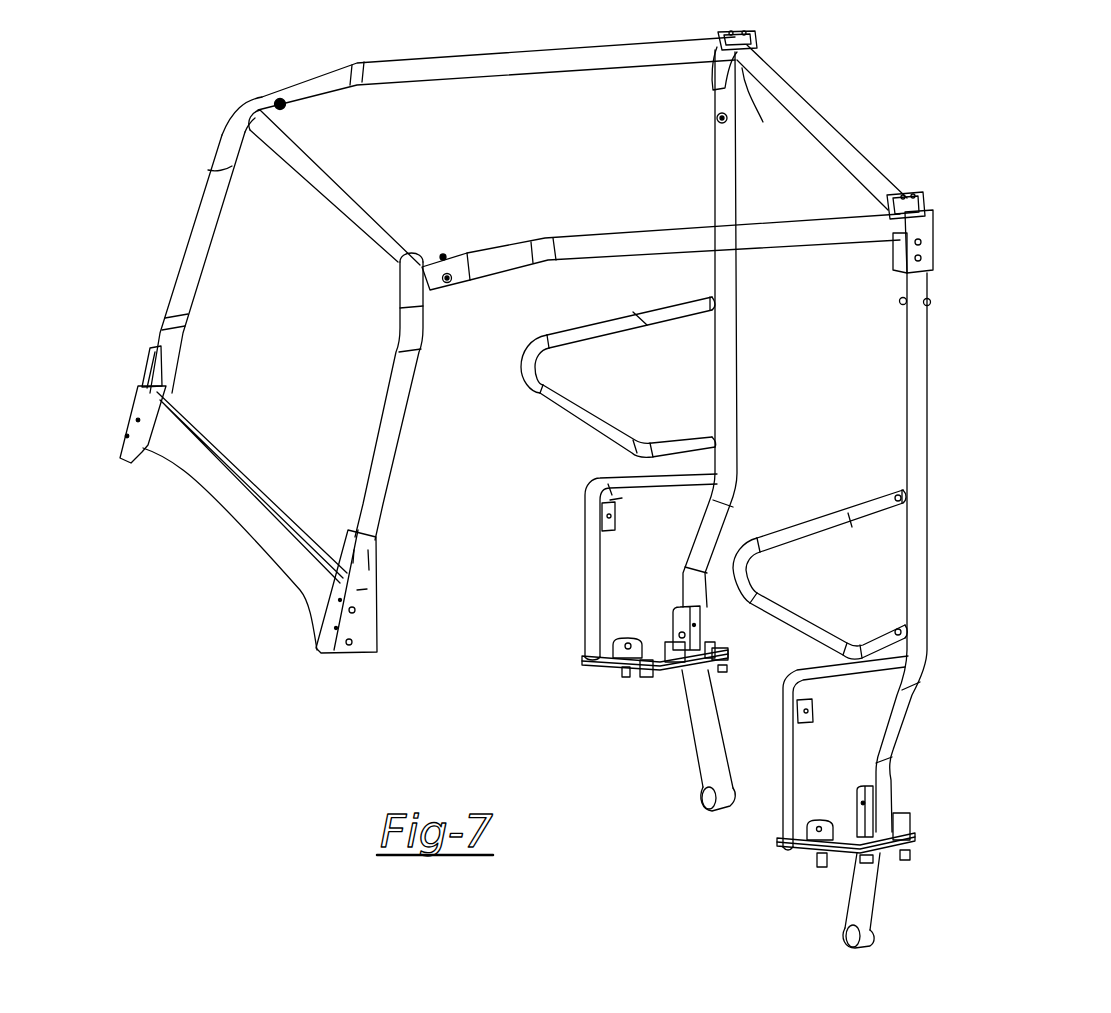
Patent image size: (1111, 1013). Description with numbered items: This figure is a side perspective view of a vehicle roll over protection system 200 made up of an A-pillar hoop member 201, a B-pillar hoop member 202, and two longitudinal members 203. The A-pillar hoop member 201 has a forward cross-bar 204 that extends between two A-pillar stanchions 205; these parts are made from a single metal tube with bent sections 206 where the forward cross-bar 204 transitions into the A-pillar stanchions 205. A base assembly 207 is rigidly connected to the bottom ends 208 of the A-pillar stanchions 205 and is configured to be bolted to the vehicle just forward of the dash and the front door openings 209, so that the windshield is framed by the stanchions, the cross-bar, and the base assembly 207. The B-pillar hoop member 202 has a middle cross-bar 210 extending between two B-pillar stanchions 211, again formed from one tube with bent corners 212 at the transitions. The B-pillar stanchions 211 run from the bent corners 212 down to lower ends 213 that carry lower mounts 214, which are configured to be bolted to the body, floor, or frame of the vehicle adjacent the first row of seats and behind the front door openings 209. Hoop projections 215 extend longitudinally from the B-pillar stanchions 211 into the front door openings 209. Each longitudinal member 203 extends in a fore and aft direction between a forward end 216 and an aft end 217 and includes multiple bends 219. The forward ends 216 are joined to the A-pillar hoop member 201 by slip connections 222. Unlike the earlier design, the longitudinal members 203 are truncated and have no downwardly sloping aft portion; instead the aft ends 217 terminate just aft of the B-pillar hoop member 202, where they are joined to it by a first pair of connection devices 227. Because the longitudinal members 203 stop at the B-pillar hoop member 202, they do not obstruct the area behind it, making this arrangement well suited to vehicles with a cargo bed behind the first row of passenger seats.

The vehicle roll over protection system 200 is at (998, 118).
The A-pillar hoop member 201 is at (172, 278).
The B-pillar hoop member 202 is at (927, 413).
The longitudinal member 203 is at (590, 55).
The forward cross-bar 204 is at (333, 200).
The A-pillar stanchion 205 is at (183, 297).
The bent section 206 is at (223, 148).
The base assembly 207 is at (210, 477).
The bottom end 208 is at (167, 377).
The front door opening 209 is at (495, 632).
The middle cross-bar 210 is at (853, 173).
The B-pillar stanchion 211 is at (735, 355).
The bent corner 212 is at (743, 100).
The lower end 213 is at (693, 708).
The lower mount 214 is at (653, 653).
The hoop projection 215 is at (582, 333).
The forward end 216 is at (458, 265).
The aft end 217 is at (933, 215).
The bend 219 is at (537, 253).
The slip connection 222 is at (262, 96).
The first pair of connection devices 227 is at (768, 38).